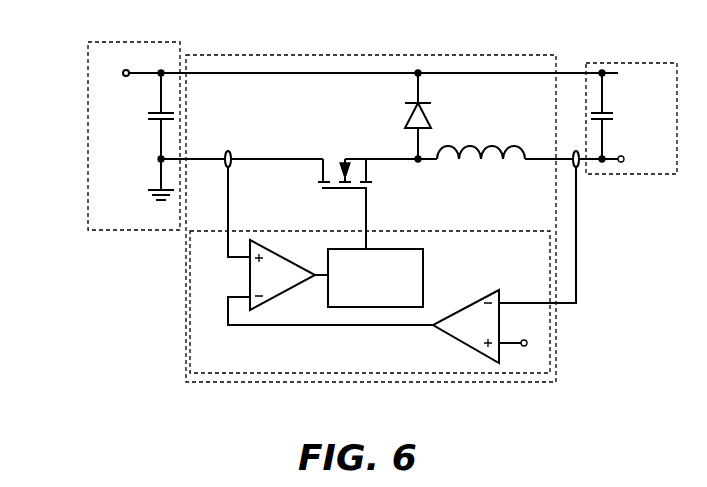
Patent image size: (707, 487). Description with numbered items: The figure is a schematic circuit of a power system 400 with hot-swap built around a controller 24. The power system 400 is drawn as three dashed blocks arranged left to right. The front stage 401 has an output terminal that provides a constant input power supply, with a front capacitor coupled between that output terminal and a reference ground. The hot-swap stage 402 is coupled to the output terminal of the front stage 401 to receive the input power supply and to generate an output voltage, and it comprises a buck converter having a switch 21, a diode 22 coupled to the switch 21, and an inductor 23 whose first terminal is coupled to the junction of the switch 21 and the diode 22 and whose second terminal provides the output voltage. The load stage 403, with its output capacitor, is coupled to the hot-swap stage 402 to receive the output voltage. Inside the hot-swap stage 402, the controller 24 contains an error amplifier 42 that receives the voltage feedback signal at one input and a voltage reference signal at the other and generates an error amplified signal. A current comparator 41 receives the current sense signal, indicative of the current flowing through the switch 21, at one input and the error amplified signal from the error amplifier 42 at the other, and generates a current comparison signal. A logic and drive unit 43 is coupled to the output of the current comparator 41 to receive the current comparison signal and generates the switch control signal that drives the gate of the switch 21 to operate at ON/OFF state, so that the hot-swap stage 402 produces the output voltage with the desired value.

The power system 400 is at (75, 60).
The front stage 401 is at (156, 136).
The hot-swap stage 402 is at (490, 50).
The load stage 403 is at (631, 118).
The switch 21 is at (336, 155).
The diode 22 is at (437, 115).
The inductor 23 is at (482, 142).
The controller 24 is at (383, 270).
The current comparator 41 is at (282, 275).
The error amplifier 42 is at (466, 326).
The logic and drive unit 43 is at (438, 263).